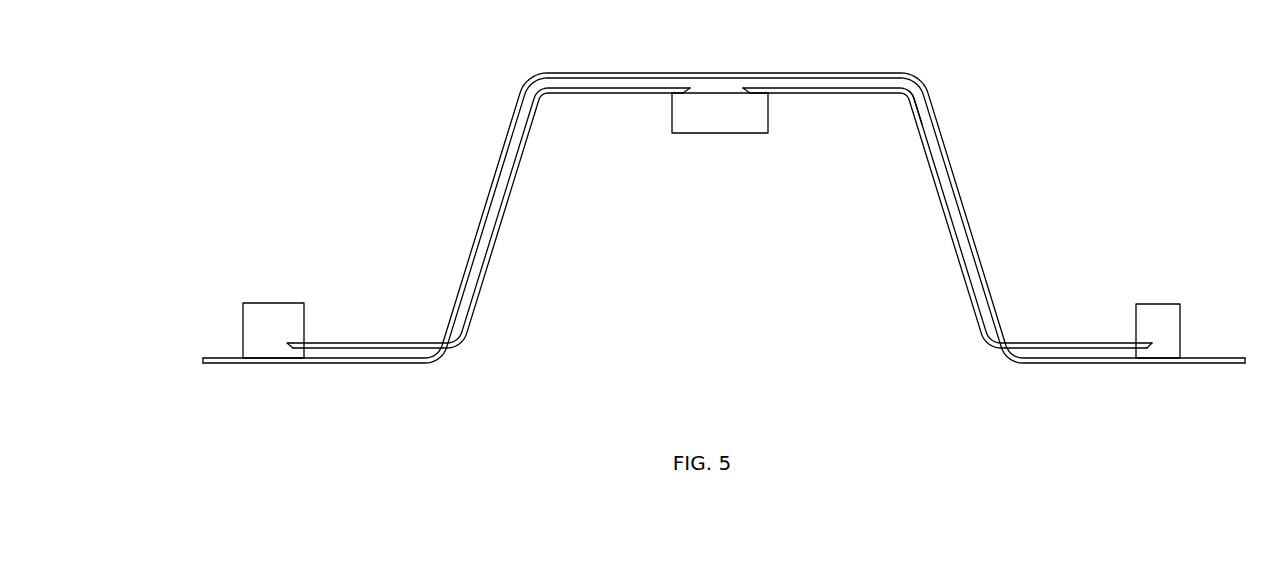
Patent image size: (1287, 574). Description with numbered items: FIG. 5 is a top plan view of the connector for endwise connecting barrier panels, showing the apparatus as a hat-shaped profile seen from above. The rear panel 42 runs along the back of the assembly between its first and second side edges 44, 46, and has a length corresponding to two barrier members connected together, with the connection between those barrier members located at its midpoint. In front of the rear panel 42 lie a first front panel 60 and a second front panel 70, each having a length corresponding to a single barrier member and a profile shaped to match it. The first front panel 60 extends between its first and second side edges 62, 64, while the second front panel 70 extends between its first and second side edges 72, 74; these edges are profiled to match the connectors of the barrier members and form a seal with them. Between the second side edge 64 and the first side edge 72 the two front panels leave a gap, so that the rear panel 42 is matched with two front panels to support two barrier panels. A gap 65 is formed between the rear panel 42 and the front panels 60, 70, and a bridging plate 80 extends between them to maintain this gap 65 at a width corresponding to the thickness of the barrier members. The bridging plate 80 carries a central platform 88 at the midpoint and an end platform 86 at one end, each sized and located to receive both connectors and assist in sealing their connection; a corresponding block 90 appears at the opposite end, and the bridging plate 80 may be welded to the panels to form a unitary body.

The rear panel 42 is at (870, 74).
The first side edge of rear panel 44 is at (1153, 351).
The second side edge of rear panel 46 is at (288, 351).
The first front panel 60 is at (505, 215).
The first side edge of first front panel 62 is at (203, 366).
The second side edge of first front panel 64 is at (685, 90).
The gap 65 is at (923, 128).
The second front panel 70 is at (934, 213).
The first side edge of second front panel 72 is at (748, 90).
The second side edge of second front panel 74 is at (1245, 366).
The bridging plate 80 is at (719, 95).
The end platform 86 is at (272, 326).
The central platform 88 is at (692, 135).
The second spacer block 90 is at (1159, 322).